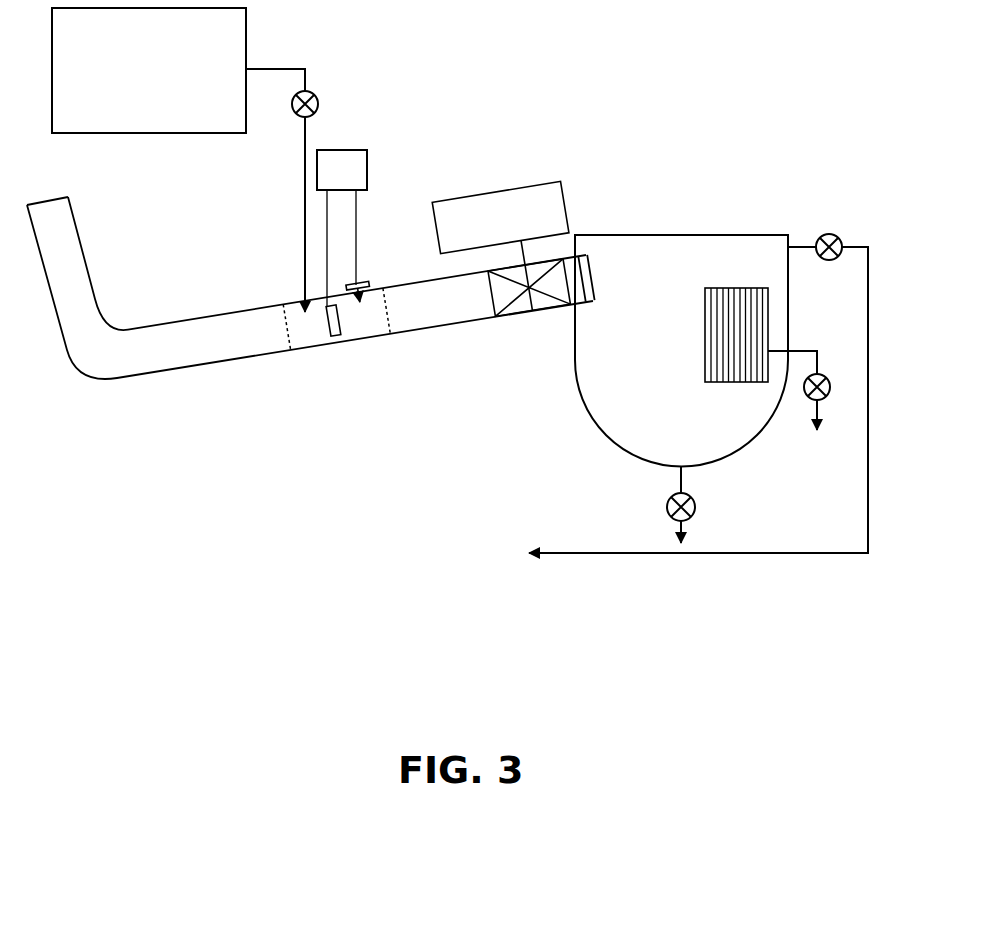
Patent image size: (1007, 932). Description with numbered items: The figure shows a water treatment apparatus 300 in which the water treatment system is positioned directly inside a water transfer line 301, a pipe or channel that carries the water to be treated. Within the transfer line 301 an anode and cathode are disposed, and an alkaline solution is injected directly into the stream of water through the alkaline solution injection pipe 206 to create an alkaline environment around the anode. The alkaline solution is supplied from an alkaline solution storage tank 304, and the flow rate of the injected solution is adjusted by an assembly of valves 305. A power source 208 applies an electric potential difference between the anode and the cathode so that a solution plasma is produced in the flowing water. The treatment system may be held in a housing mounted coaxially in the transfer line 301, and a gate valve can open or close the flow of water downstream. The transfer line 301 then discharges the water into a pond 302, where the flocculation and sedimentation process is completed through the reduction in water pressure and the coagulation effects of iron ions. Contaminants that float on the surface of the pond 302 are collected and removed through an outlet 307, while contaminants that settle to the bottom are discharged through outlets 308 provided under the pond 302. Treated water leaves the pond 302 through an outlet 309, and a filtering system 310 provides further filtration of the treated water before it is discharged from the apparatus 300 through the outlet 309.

The water treatment apparatus 300 is at (243, 522).
The water transfer line 301 is at (147, 376).
The pond 302 is at (590, 404).
The alkaline solution storage tank 304 is at (149, 70).
The assembly of valves 305 is at (316, 87).
The outlet 307 is at (803, 245).
The outlets 308 is at (692, 481).
The outlet 309 is at (808, 350).
The filtering system 310 is at (704, 336).
The alkaline solution injection pipe 206 is at (305, 222).
The power source 208 is at (367, 165).